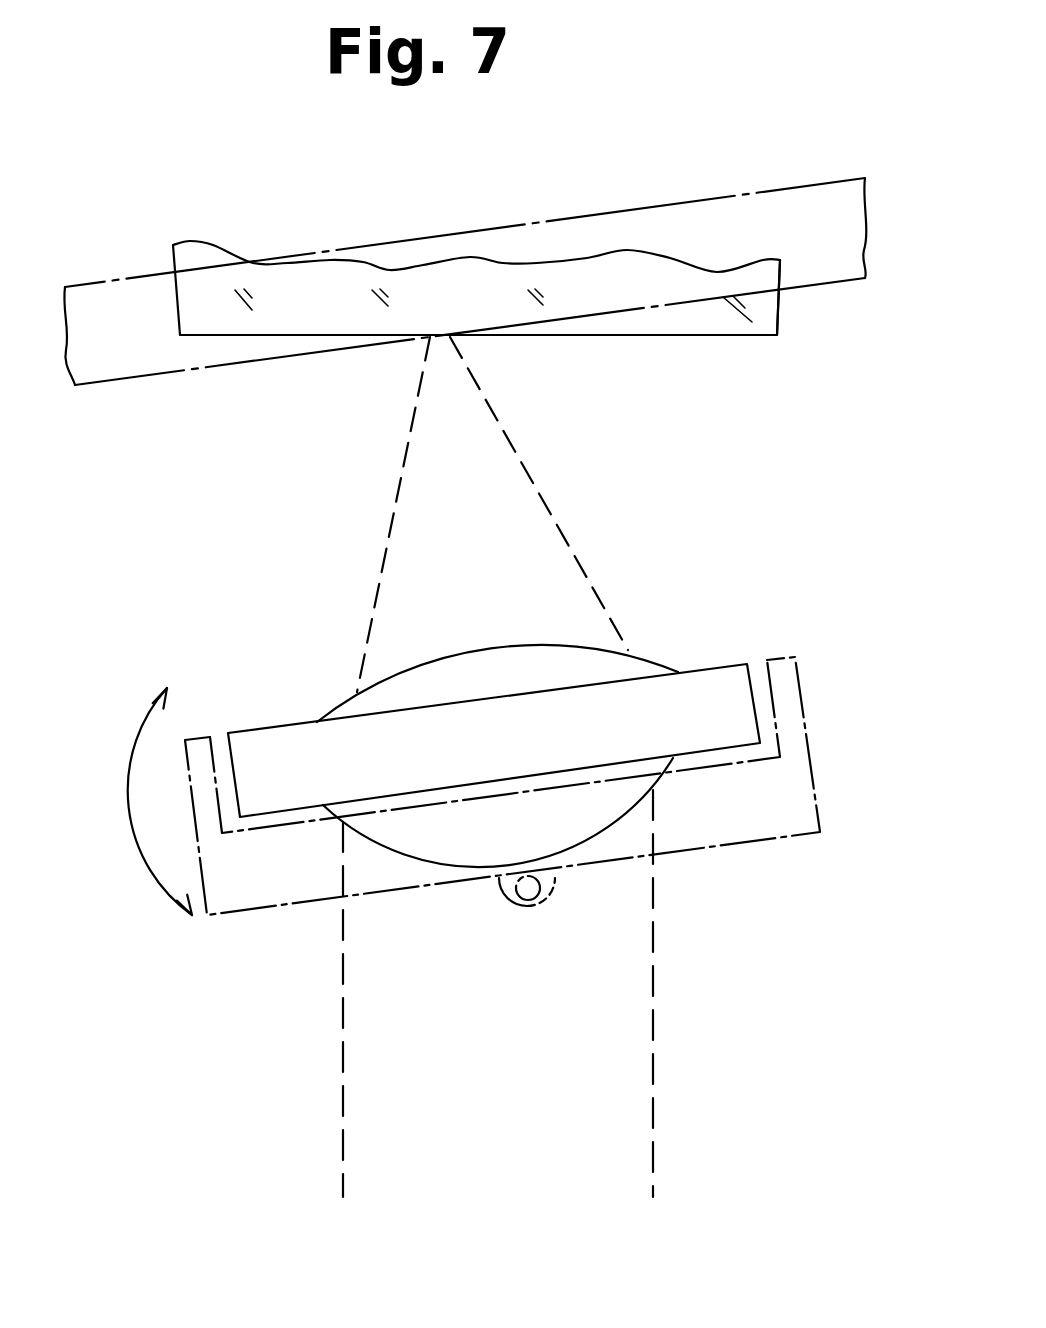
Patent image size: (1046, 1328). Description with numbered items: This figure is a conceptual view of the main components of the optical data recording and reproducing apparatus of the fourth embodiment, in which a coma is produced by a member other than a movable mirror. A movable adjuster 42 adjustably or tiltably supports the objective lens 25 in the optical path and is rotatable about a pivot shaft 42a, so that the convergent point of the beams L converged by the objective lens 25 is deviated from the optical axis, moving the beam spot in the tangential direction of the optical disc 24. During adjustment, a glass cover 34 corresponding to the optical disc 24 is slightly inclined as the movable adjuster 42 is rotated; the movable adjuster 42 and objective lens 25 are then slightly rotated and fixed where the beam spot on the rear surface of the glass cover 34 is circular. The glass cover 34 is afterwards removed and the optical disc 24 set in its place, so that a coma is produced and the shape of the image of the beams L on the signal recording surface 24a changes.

The optical disc 24 is at (632, 262).
The signal recording surface 24a is at (728, 335).
The glass cover 34 is at (715, 203).
The objective lens 25 is at (705, 662).
The movable adjuster 42 is at (805, 720).
The pivot shaft 42a is at (530, 888).
The beams L is at (660, 1014).